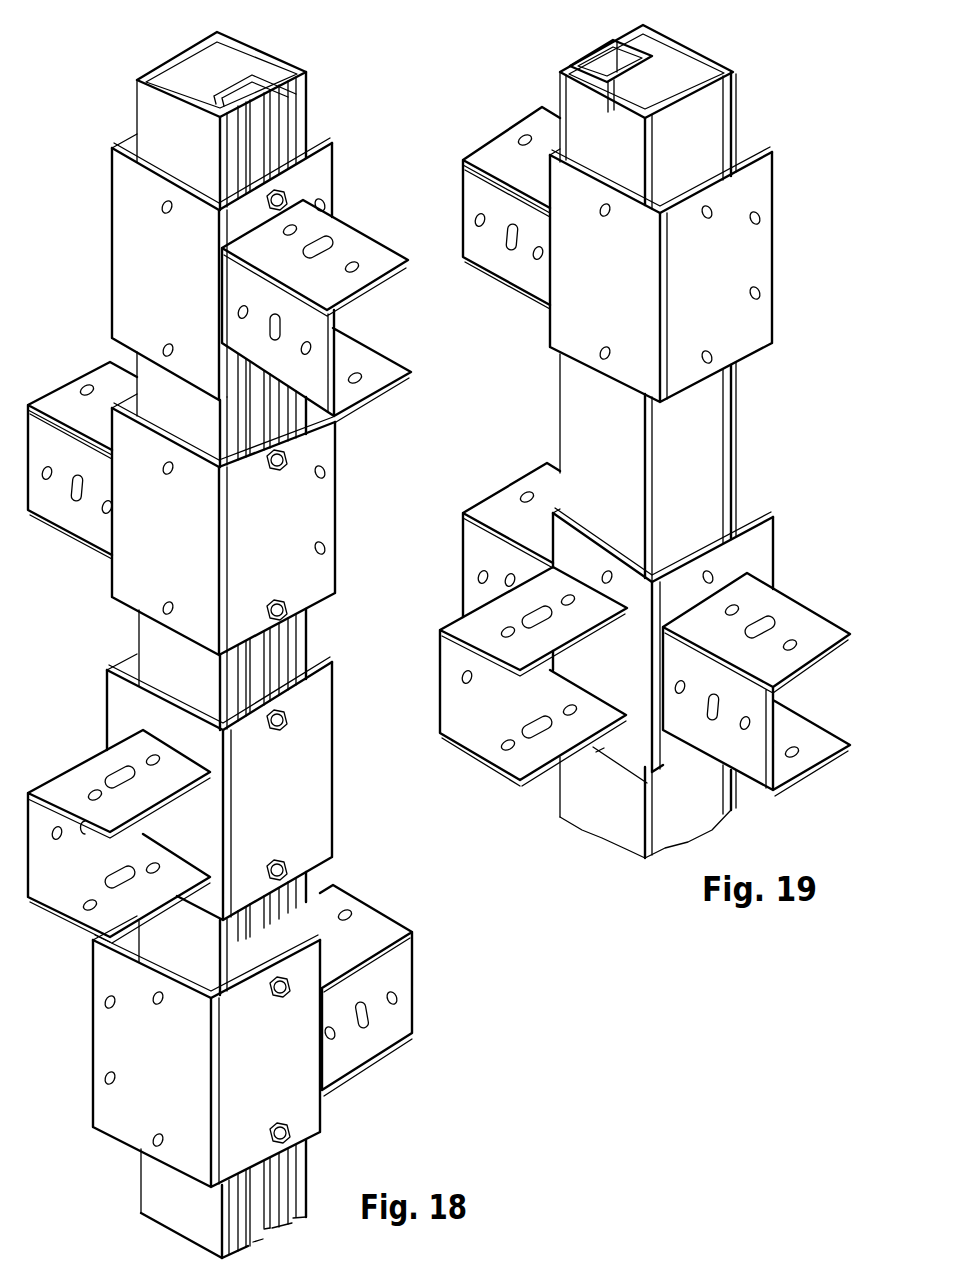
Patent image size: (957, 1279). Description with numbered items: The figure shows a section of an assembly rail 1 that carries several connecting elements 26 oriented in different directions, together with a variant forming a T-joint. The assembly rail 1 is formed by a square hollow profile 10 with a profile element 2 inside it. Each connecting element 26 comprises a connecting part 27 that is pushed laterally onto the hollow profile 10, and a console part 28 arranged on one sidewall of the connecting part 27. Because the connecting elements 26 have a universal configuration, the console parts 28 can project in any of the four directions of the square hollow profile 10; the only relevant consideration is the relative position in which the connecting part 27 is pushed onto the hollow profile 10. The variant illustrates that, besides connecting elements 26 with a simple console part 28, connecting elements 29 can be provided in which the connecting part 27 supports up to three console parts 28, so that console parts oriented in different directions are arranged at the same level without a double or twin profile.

In FIG. 18, the assembly rail 1 is at (164, 53).
In FIG. 19, the assembly rail 1 is at (703, 52).
In FIG. 18, the profile element 2 is at (268, 66).
In FIG. 19, the profile element 2 is at (592, 58).
In FIG. 18, the square hollow profile 10 is at (143, 98).
In FIG. 19, the square hollow profile 10 is at (713, 100).
In FIG. 18, the connecting element 26 is at (344, 211).
In FIG. 18, the connecting part 27 is at (135, 240).
In FIG. 19, the connecting part 27 is at (762, 545).
In FIG. 18, the console part 28 is at (382, 251).
In FIG. 19, the console part 28 is at (508, 493).
In FIG. 19, the connecting element 29 is at (600, 750).